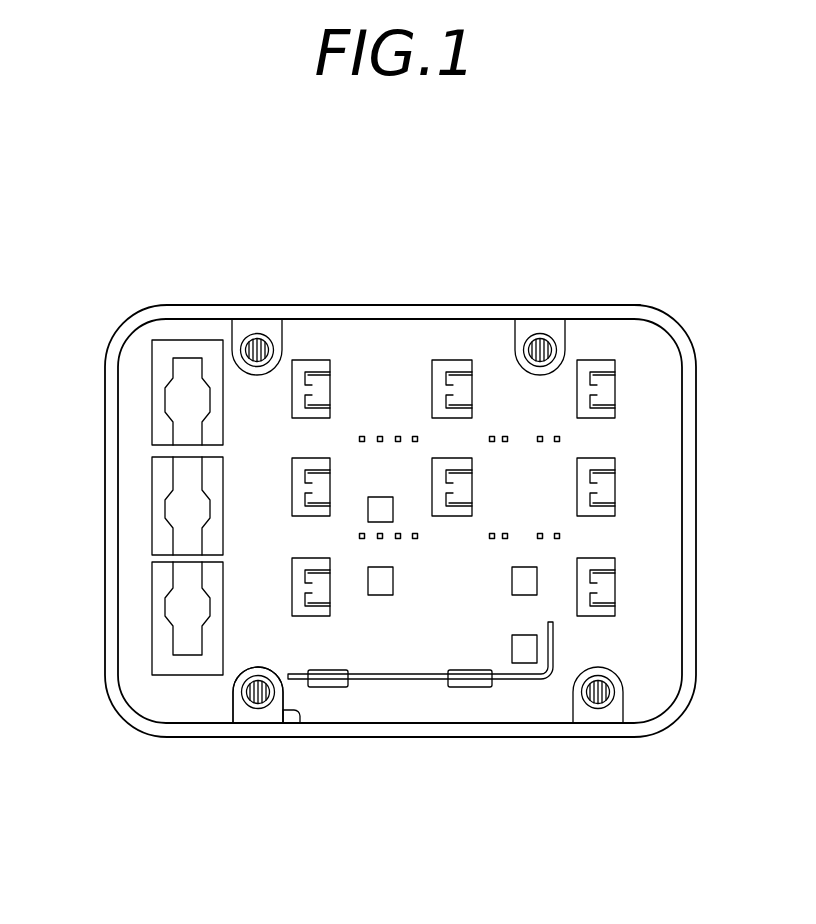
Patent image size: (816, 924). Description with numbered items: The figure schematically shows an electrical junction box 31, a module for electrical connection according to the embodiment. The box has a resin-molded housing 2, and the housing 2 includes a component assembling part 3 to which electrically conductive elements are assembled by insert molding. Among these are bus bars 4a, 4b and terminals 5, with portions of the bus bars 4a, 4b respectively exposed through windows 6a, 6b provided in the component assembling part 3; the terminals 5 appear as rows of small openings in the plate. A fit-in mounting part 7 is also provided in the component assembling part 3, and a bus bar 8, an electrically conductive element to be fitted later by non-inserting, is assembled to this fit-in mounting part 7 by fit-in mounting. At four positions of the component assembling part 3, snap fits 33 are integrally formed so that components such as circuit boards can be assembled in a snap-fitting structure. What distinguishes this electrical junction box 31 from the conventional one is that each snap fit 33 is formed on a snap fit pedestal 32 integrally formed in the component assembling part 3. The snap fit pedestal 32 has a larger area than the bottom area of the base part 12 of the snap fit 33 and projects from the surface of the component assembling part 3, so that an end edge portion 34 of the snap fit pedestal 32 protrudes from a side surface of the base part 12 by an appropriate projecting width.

The housing 2 is at (696, 500).
The component assembling part 3 is at (655, 570).
The electrical junction box 31 is at (550, 290).
The snap fit 33 is at (243, 333).
The end edge portion 34 is at (256, 671).
The base part 12 is at (258, 710).
The snap fit pedestal 32 is at (296, 712).
The bus bar 4a is at (313, 360).
The bus bar 4b is at (170, 385).
The window 6a is at (452, 360).
The window 6b is at (153, 495).
The terminals 5 is at (362, 434).
The fit-in mounting part 7 is at (336, 689).
The bus bar 8 is at (388, 681).